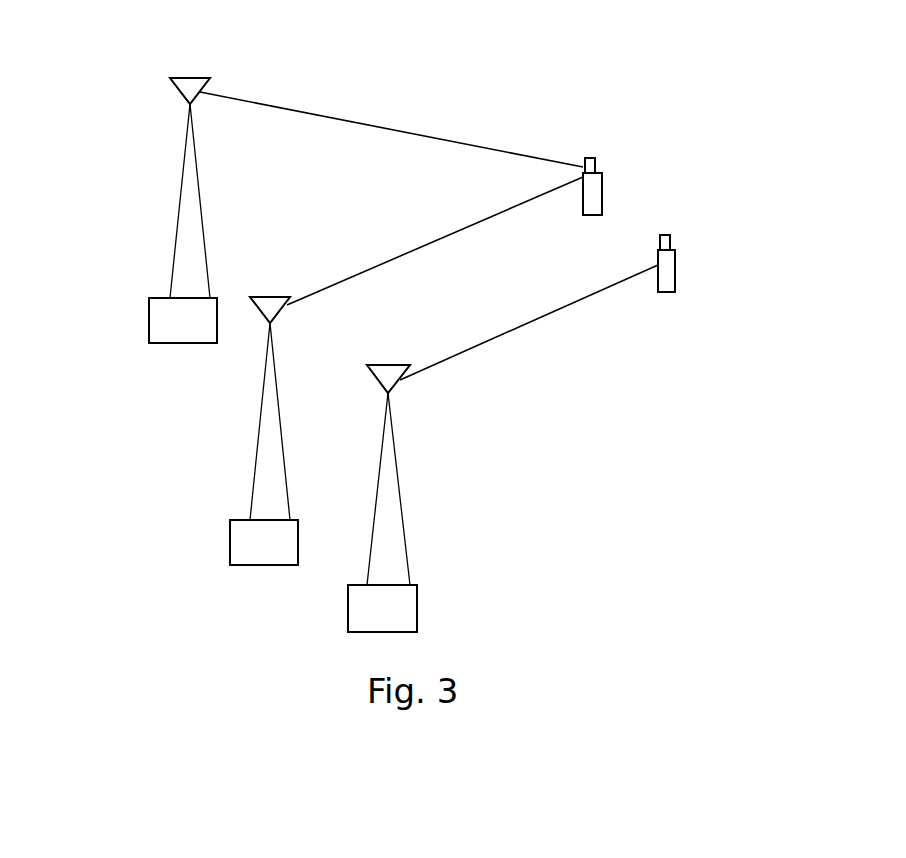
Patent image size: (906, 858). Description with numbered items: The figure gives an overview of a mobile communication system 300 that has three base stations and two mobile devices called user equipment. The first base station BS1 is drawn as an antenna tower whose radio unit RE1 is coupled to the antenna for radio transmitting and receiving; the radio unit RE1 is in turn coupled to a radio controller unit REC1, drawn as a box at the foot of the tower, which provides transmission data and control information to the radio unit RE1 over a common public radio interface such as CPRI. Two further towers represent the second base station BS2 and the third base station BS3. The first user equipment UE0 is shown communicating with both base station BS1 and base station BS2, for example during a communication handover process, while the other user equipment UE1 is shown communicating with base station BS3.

The mobile communication system 300 is at (747, 32).
The radio unit RE1 is at (190, 78).
The base station BS1 is at (140, 157).
The radio controller unit REC1 is at (149, 322).
The base station BS2 is at (267, 423).
The base station BS3 is at (402, 497).
The user equipment UE0 is at (597, 200).
The user equipment UE1 is at (670, 277).